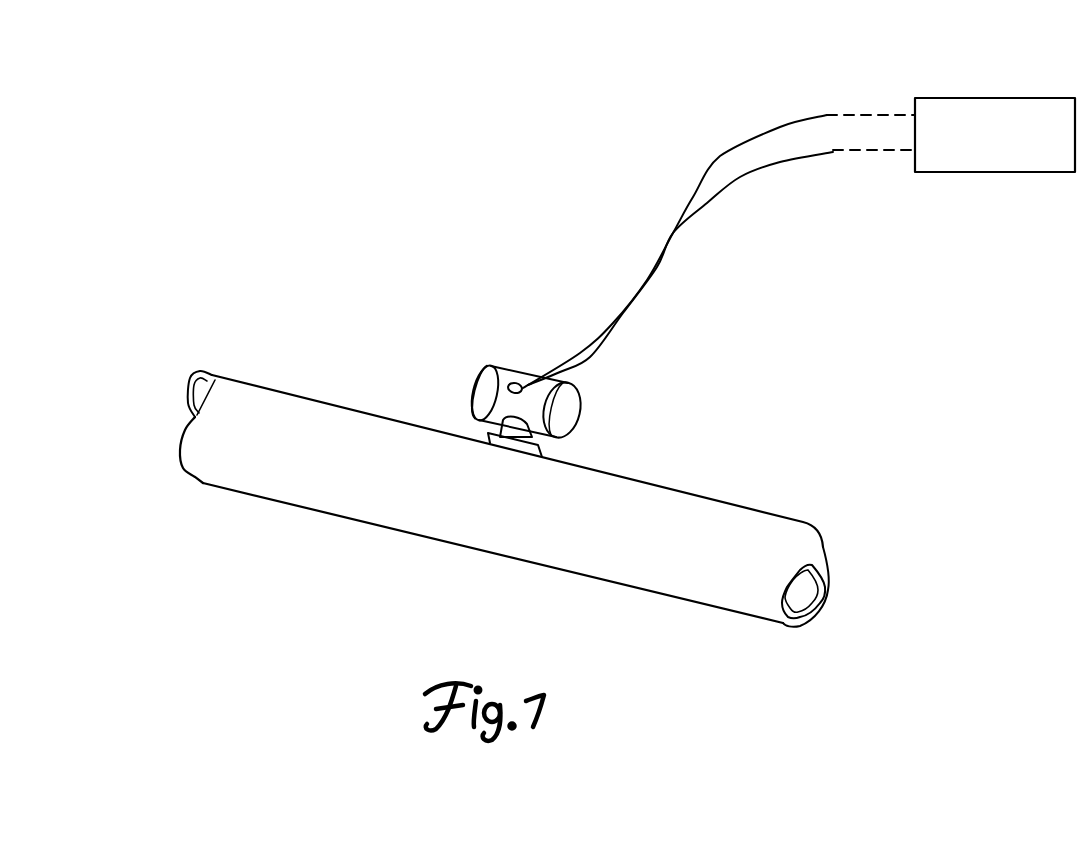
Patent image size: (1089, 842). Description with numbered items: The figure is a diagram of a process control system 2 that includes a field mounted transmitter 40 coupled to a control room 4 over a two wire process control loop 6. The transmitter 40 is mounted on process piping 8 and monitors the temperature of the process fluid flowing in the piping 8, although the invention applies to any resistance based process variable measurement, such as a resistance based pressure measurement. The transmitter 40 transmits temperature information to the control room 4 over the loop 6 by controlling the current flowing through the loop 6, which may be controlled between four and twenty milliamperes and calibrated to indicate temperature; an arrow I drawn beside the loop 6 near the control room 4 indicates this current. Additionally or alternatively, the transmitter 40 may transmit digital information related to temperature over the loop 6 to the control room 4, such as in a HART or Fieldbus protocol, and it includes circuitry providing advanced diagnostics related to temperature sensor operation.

The process control system 2 is at (292, 228).
The control room 4 is at (1020, 98).
The two wire process control loop 6 is at (721, 158).
The process piping 8 is at (282, 483).
The field mounted transmitter 40 is at (583, 408).
The direction arrow I is at (846, 100).